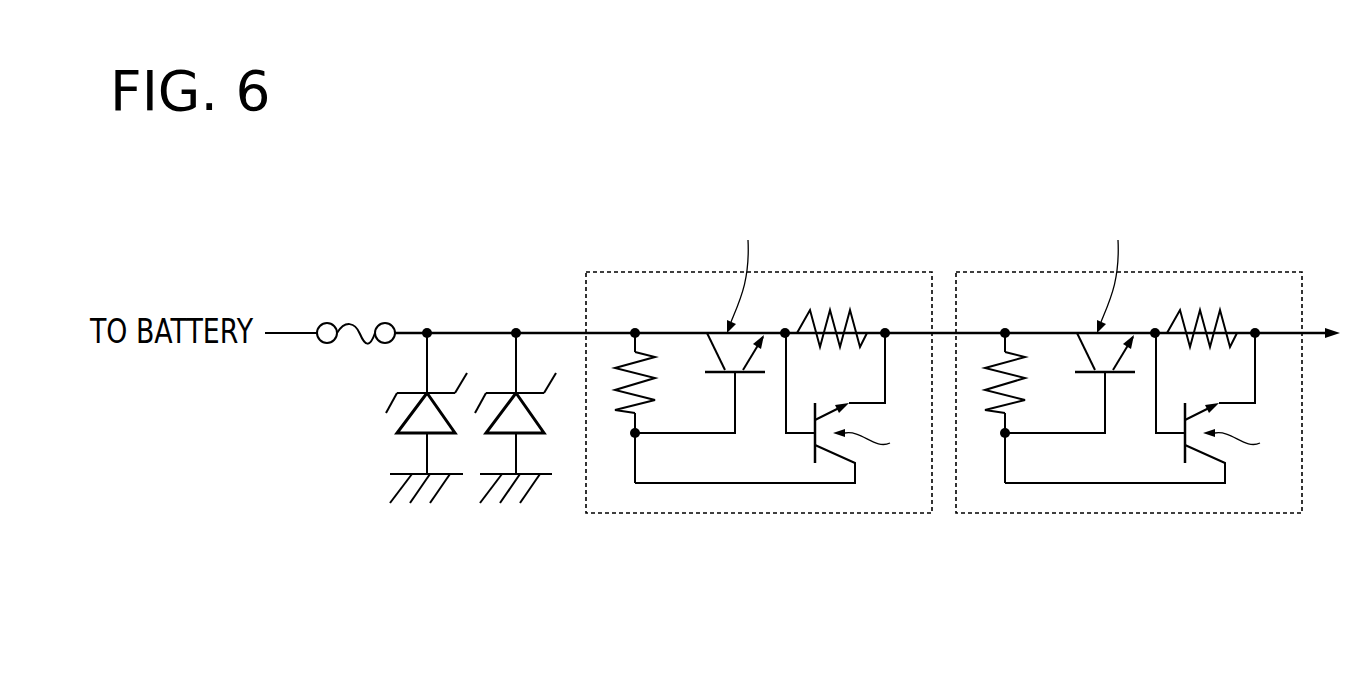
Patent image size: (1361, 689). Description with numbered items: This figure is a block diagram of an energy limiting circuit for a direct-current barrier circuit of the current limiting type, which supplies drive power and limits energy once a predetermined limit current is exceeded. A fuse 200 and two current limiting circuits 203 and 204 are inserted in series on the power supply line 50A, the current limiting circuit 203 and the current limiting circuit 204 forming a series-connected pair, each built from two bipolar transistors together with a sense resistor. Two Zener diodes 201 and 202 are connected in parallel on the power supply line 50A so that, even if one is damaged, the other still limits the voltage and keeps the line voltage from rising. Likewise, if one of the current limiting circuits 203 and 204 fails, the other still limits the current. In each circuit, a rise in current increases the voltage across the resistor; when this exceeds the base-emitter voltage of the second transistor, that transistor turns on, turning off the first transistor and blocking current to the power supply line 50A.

The power supply line 50A is at (292, 333).
The fuse 200 is at (378, 310).
The Zener diode 201 is at (374, 437).
The Zener diode 202 is at (562, 441).
The current limiting circuit 203 is at (637, 272).
The current limiting circuit 204 is at (1007, 272).